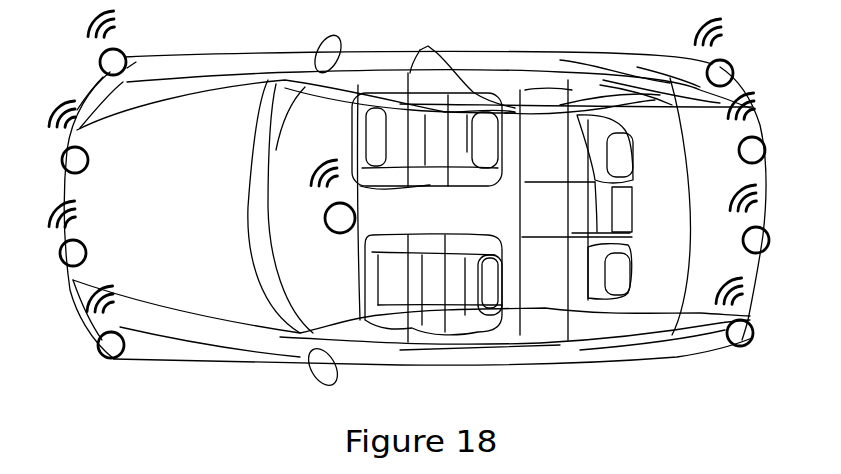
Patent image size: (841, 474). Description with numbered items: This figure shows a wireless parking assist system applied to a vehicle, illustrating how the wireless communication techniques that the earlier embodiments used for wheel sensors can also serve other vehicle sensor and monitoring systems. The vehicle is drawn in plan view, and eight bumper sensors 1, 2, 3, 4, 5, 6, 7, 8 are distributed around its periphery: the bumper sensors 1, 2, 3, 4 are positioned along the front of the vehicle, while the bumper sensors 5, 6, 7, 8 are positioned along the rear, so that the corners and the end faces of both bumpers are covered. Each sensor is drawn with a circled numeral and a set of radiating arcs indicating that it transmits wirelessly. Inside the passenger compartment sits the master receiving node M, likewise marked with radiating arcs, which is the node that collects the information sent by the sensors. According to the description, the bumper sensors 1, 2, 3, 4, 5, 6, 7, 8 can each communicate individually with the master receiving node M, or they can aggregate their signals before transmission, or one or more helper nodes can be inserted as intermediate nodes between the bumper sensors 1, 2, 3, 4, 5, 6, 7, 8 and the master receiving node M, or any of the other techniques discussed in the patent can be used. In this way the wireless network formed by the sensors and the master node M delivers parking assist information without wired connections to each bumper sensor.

The bumper sensor 1 is at (115, 40).
The bumper sensor 2 is at (76, 130).
The bumper sensor 3 is at (76, 230).
The bumper sensor 4 is at (114, 315).
The bumper sensor 5 is at (722, 48).
The bumper sensor 6 is at (755, 122).
The bumper sensor 7 is at (757, 214).
The bumper sensor 8 is at (743, 307).
The master receiving node M is at (338, 189).